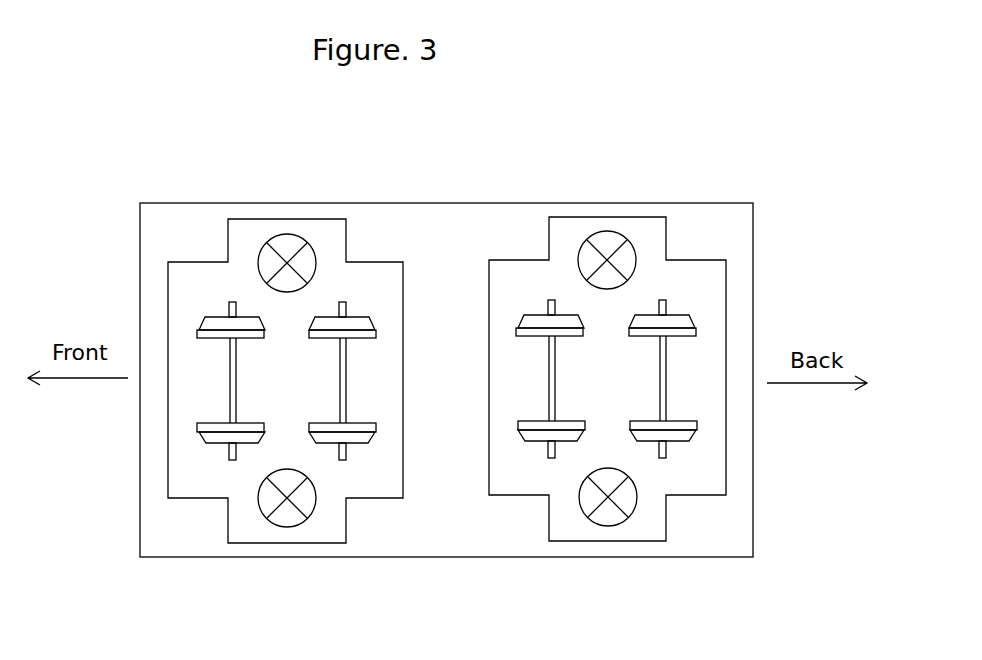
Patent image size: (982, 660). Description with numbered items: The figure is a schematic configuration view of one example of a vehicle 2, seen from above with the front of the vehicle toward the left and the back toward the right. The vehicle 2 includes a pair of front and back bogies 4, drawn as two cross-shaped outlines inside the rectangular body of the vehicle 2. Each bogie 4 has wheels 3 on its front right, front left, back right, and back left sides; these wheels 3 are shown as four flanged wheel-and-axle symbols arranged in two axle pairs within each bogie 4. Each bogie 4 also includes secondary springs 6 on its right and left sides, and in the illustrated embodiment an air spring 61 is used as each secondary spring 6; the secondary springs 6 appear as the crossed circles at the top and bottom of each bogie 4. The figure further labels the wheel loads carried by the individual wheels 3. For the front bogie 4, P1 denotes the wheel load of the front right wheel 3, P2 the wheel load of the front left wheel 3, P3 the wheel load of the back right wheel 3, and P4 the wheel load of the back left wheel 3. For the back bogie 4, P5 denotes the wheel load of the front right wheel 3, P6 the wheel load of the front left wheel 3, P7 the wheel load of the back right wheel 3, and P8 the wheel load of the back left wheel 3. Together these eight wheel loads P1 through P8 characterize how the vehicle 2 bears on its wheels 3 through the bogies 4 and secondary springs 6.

The vehicle 2 is at (743, 242).
The wheel 3 is at (447, 379).
The bogie 4 is at (357, 273).
The secondary spring 6 is at (452, 386).
The air spring 61 is at (288, 240).
The wheel load P1 is at (227, 313).
The wheel load P2 is at (227, 447).
The wheel load P3 is at (344, 313).
The wheel load P4 is at (344, 447).
The wheel load P5 is at (548, 311).
The wheel load P6 is at (548, 445).
The wheel load P7 is at (666, 311).
The wheel load P8 is at (667, 445).